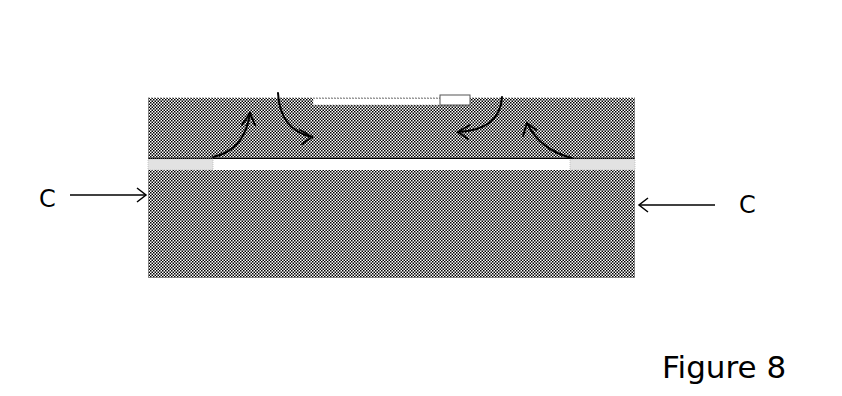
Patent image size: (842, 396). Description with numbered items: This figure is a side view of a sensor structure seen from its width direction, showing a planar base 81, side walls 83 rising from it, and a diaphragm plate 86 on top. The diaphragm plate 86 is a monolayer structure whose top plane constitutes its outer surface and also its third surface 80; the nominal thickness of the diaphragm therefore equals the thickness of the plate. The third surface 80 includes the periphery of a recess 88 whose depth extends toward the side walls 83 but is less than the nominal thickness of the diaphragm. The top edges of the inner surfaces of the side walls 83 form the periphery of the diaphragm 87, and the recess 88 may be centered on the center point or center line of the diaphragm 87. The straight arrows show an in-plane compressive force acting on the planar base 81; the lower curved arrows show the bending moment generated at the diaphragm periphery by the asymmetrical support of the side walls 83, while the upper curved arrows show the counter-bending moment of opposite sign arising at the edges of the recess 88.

The third surface 80 is at (540, 93).
The planar base 81 is at (613, 263).
The side walls 83 is at (607, 160).
The diaphragm plate 86 is at (613, 113).
The diaphragm 87 is at (440, 96).
The recess 88 is at (371, 98).